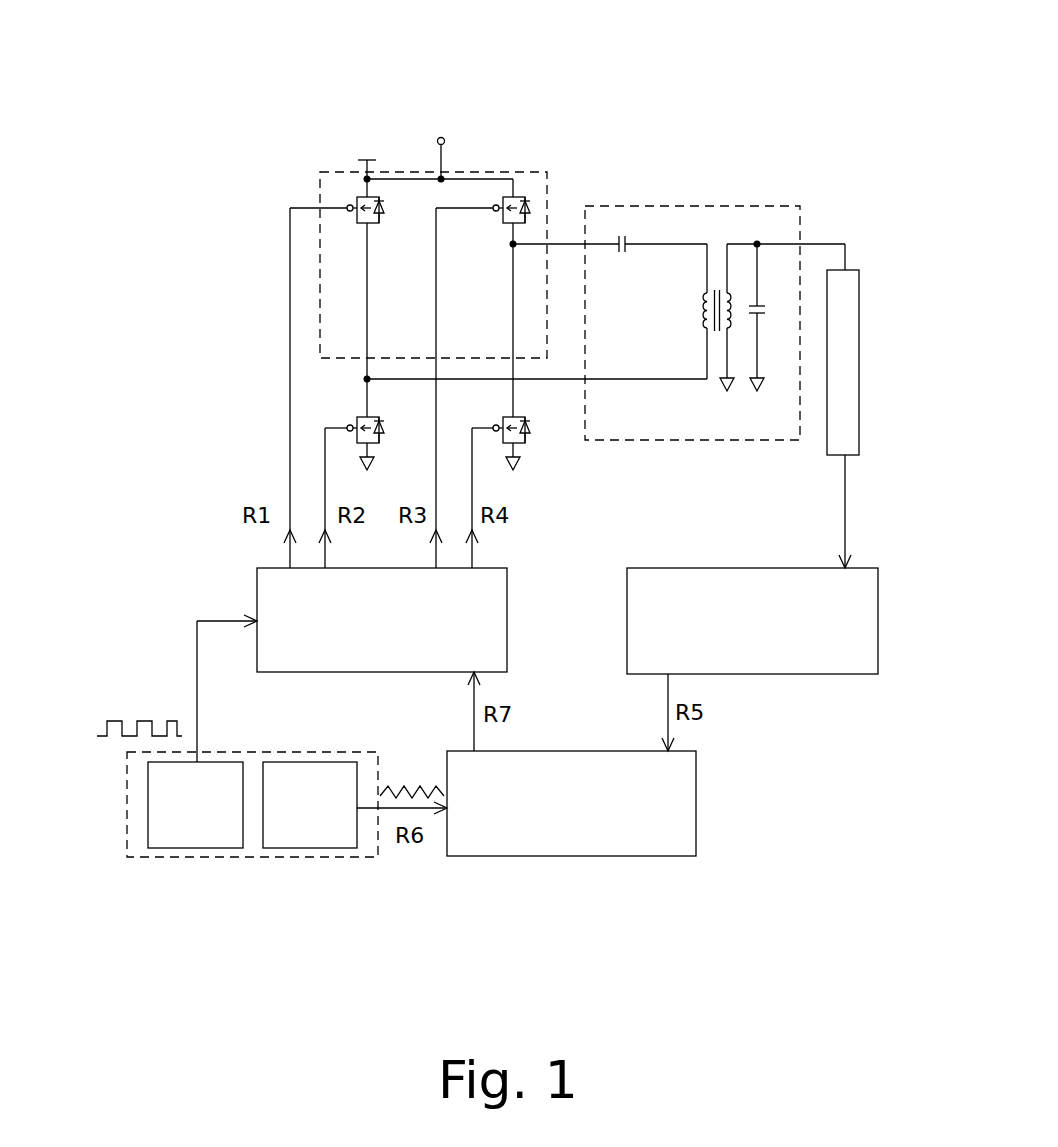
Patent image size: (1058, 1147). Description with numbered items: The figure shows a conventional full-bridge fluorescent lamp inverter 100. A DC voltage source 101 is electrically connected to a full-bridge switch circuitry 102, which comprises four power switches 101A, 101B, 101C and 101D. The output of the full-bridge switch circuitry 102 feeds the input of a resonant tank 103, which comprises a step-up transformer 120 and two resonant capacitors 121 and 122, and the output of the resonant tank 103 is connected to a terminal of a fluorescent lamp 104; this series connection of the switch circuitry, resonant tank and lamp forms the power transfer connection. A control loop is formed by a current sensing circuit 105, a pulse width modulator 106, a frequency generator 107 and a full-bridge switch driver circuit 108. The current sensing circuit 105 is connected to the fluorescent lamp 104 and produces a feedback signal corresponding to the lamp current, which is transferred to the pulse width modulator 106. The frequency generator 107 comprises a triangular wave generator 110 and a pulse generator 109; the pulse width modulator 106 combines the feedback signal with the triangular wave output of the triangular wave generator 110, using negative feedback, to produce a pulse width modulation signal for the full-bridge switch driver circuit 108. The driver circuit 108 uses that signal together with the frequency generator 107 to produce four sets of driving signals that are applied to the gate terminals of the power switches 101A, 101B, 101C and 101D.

The full-bridge inverter 100 is at (762, 60).
The DC voltage source 101 is at (439, 145).
The power switch 101A is at (359, 227).
The power switch 101B is at (343, 427).
The power switch 101C is at (483, 227).
The power switch 101D is at (489, 429).
The full-bridge switch circuitry 102 is at (535, 185).
The resonant tank 103 is at (728, 218).
The fluorescent lamp 104 is at (853, 357).
The current sensing circuit 105 is at (860, 636).
The pulse width modulator 106 is at (660, 843).
The frequency generator 107 is at (133, 847).
The full-bridge switch driver circuit 108 is at (272, 583).
The pulse generator 109 is at (157, 794).
The triangular wave generator 110 is at (300, 840).
The step-up transformer 120 is at (693, 310).
The resonant capacitor 121 is at (774, 317).
The resonant capacitor 122 is at (623, 232).